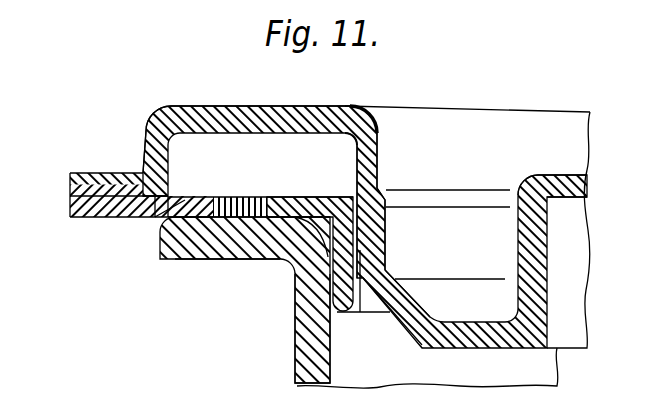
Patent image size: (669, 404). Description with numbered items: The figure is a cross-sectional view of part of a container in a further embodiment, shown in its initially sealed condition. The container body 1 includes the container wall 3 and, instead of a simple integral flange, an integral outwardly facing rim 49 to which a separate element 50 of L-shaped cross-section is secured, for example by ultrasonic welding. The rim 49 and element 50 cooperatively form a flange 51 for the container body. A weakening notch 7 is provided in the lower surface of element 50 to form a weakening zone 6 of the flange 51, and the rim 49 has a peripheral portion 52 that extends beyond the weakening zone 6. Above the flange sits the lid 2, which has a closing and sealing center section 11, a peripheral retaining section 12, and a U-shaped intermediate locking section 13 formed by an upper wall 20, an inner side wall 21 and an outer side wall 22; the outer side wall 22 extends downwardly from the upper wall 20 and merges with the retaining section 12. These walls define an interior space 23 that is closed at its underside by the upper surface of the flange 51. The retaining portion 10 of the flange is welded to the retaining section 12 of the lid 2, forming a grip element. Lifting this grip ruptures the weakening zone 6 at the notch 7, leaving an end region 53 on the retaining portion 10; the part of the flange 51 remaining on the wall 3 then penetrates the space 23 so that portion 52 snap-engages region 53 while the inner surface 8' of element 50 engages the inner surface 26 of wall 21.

The container body 1 is at (287, 371).
The lid 2 is at (475, 131).
The container wall 3 is at (300, 355).
The weakening zone 6 is at (196, 197).
The weakening notch 7 is at (170, 219).
The inner surface of element 8' is at (363, 301).
The retaining portion 10 is at (74, 218).
The center section 11 is at (572, 178).
The peripheral retaining section 12 is at (83, 175).
The intermediate locking section 13 is at (213, 101).
The upper wall 20 is at (253, 107).
The inner side wall 21 is at (382, 140).
The outer side wall 22 is at (140, 139).
The interior space 23 is at (262, 149).
The inner surface of wall 26 is at (339, 125).
The rim 49 is at (238, 241).
The element 50 is at (240, 197).
The flange 51 is at (283, 194).
The peripheral portion 52 is at (161, 250).
The end region 53 is at (138, 218).